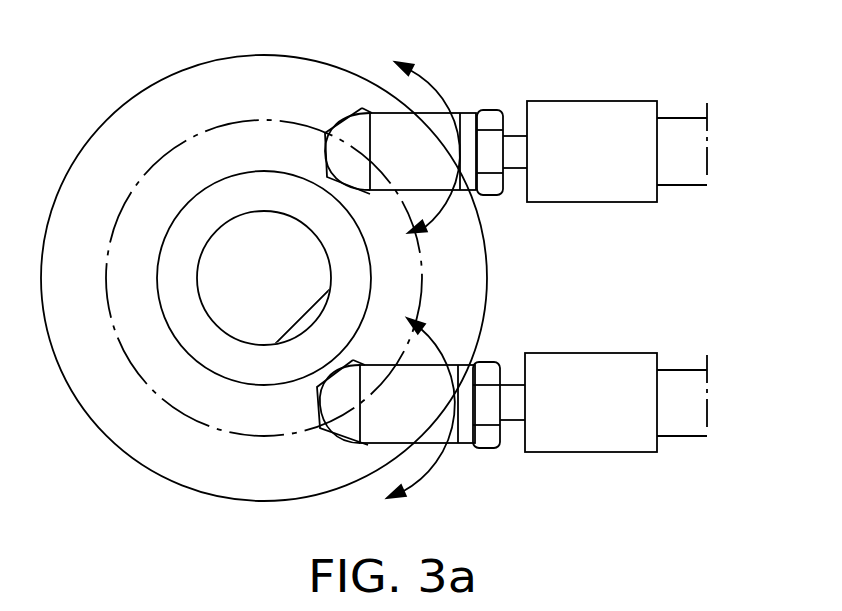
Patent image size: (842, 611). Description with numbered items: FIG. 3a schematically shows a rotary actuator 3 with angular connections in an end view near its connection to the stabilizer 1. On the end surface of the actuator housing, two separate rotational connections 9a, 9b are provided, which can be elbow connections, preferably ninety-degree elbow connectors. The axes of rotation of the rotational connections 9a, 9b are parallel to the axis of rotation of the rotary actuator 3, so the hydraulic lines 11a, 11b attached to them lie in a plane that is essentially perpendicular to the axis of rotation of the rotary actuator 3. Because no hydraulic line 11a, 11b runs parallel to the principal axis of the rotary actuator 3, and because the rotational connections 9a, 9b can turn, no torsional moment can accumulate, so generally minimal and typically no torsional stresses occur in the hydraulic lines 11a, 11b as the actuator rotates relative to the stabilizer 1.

The stabilizer 1 is at (223, 320).
The rotary actuator 3 is at (83, 355).
The rotational connection 9a is at (352, 425).
The rotational connection 9b is at (392, 125).
The hydraulic line 11a is at (622, 127).
The hydraulic line 11b is at (622, 380).